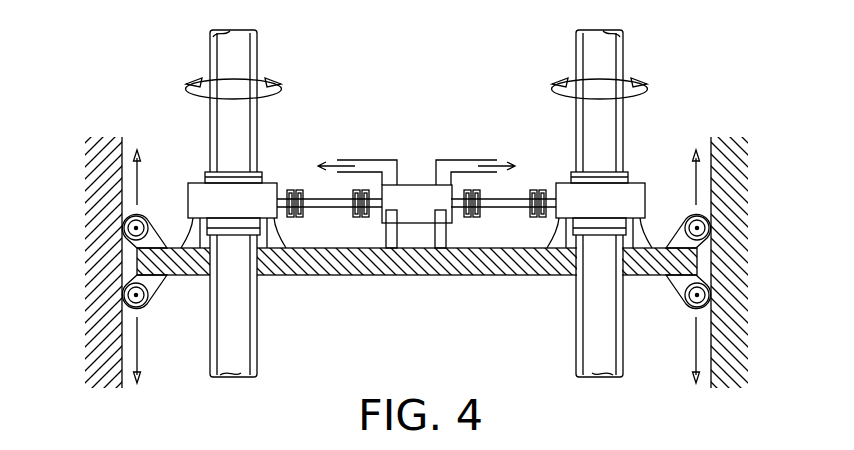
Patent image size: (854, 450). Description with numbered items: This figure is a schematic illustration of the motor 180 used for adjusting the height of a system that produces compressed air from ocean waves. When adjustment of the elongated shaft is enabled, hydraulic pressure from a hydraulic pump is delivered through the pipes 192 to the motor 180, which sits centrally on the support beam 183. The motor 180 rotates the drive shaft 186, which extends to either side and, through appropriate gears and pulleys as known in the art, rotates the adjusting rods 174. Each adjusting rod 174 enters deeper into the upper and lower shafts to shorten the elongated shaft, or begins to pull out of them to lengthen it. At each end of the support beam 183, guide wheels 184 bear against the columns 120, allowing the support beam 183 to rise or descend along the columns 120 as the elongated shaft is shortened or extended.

The columns 120 is at (122, 140).
The adjusting rod 174 is at (578, 130).
The motor 180 is at (410, 185).
The support beam 183 is at (427, 276).
The guide wheels 184 is at (126, 292).
The drive shaft 186 is at (320, 198).
The pipes 192 is at (375, 162).